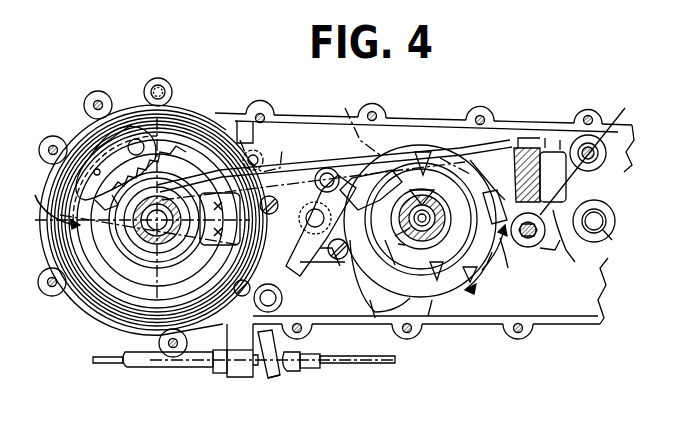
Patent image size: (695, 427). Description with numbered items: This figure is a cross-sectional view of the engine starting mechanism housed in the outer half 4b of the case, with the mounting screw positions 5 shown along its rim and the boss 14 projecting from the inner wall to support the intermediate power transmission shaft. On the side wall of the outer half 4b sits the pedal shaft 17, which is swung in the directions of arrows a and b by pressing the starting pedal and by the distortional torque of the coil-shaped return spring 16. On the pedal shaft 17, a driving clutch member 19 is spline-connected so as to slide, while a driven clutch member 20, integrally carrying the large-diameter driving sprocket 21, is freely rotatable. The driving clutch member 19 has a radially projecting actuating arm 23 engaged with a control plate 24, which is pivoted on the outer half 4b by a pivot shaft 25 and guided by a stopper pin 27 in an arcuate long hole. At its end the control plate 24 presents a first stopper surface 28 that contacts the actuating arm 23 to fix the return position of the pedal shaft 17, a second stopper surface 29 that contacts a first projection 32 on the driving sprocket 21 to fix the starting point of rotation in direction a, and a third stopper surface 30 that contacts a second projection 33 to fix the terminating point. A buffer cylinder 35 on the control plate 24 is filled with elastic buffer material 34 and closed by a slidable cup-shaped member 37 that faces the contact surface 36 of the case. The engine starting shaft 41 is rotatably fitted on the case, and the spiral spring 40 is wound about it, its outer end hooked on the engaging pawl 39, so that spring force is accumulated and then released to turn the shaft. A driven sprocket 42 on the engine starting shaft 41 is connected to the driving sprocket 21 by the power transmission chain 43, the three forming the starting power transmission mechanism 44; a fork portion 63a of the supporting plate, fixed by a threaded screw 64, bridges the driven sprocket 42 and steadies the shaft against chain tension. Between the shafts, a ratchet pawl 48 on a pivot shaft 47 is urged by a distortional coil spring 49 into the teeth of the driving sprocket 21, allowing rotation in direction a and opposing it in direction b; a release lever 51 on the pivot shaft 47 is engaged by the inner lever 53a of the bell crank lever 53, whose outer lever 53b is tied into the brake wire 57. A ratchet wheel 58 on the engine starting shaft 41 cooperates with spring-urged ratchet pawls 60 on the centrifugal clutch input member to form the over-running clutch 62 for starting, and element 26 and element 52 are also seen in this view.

The outer half of the case 4b is at (290, 118).
The mounting screw boss 5 is at (590, 116).
The boss 14 is at (616, 212).
The return spring 16 is at (430, 125).
The pedal shaft 17 is at (351, 210).
The driving clutch member 19 is at (420, 228).
The driven clutch member 20 is at (421, 235).
The driving sprocket 21 is at (375, 318).
The actuating arm 23 is at (470, 232).
The control plate 24 is at (572, 242).
The pivot shaft 25 is at (592, 150).
The spring end 26 is at (542, 258).
The stopper pin 27 is at (528, 248).
The first stopper surface 28 is at (495, 182).
The second stopper surface 29 is at (496, 203).
The third stopper surface 30 is at (468, 160).
The first projection 32 is at (512, 258).
The second projection 33 is at (432, 318).
The elastic buffer material 34 is at (588, 192).
The buffer cylinder 35 is at (562, 148).
The contact surface 36 is at (545, 146).
The cup-shaped member 37 is at (520, 146).
The engaging pawl 39 is at (252, 142).
The spiral spring 40 is at (190, 124).
The engine starting shaft 41 is at (178, 195).
The driven sprocket 42 is at (160, 262).
The power transmission chain 43 is at (352, 119).
The starting power transmission mechanism 44 is at (385, 148).
The pivot shaft 47 is at (302, 222).
The ratchet pawl 48 is at (325, 168).
The distortional coil spring 49 is at (280, 195).
The release lever 51 is at (333, 260).
The bracket 52 is at (228, 336).
The bell crank lever 53 is at (262, 378).
The inner lever 53a is at (282, 308).
The outer lever 53b is at (278, 380).
The brake wire 57 is at (106, 365).
The ratchet wheel 58 is at (108, 182).
The ratchet pawl 60 is at (112, 148).
The over-running clutch 62 is at (43, 197).
The fork portion 63a is at (215, 282).
The threaded screw 64 is at (349, 292).
The arrow a is at (438, 277).
The arrow b is at (497, 247).